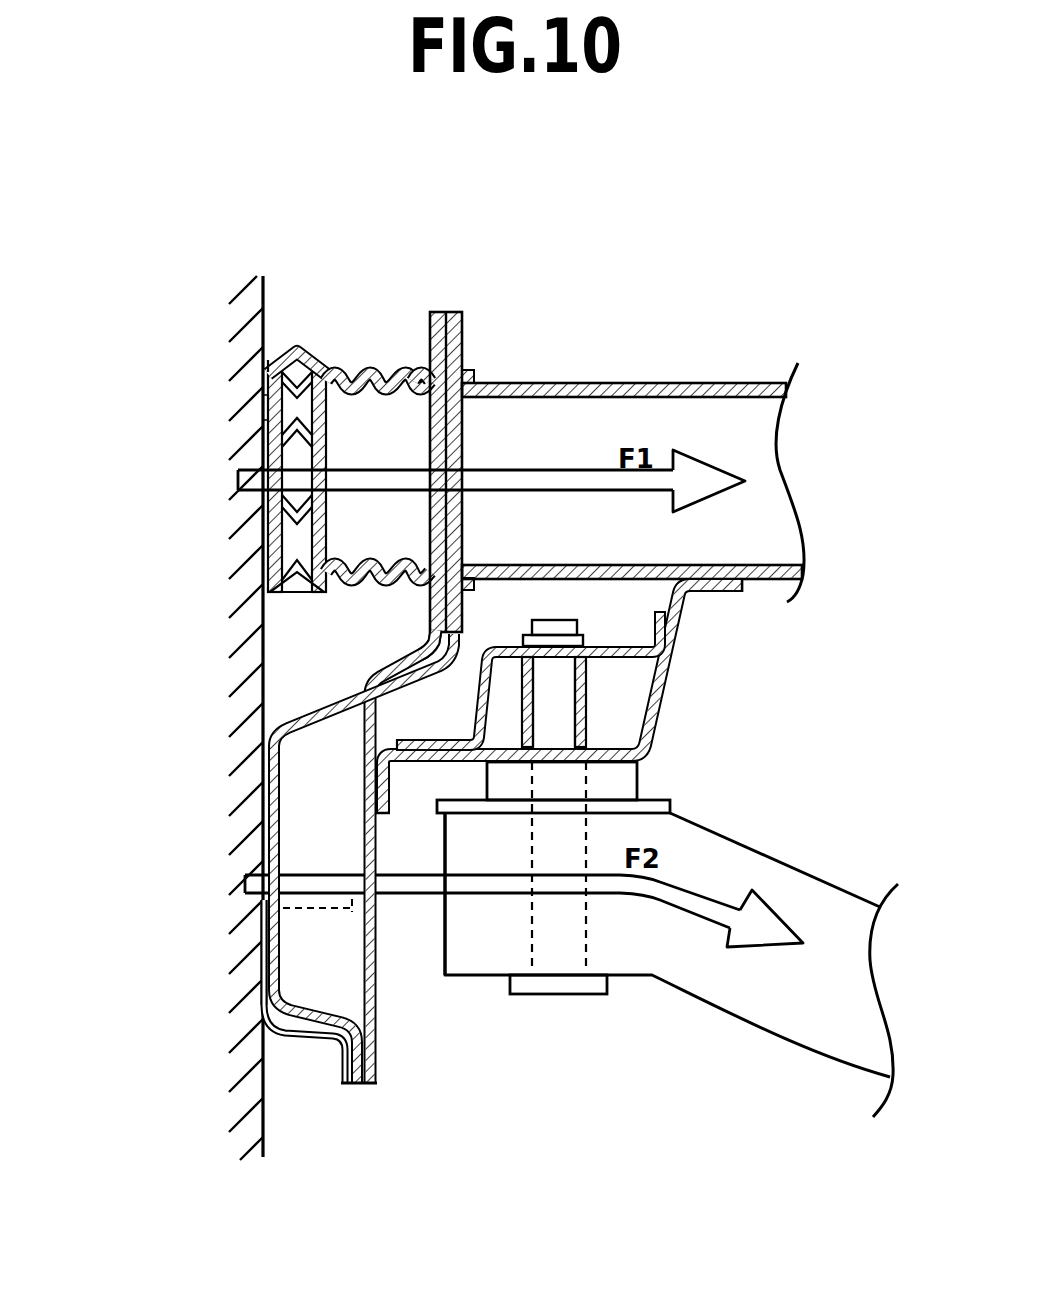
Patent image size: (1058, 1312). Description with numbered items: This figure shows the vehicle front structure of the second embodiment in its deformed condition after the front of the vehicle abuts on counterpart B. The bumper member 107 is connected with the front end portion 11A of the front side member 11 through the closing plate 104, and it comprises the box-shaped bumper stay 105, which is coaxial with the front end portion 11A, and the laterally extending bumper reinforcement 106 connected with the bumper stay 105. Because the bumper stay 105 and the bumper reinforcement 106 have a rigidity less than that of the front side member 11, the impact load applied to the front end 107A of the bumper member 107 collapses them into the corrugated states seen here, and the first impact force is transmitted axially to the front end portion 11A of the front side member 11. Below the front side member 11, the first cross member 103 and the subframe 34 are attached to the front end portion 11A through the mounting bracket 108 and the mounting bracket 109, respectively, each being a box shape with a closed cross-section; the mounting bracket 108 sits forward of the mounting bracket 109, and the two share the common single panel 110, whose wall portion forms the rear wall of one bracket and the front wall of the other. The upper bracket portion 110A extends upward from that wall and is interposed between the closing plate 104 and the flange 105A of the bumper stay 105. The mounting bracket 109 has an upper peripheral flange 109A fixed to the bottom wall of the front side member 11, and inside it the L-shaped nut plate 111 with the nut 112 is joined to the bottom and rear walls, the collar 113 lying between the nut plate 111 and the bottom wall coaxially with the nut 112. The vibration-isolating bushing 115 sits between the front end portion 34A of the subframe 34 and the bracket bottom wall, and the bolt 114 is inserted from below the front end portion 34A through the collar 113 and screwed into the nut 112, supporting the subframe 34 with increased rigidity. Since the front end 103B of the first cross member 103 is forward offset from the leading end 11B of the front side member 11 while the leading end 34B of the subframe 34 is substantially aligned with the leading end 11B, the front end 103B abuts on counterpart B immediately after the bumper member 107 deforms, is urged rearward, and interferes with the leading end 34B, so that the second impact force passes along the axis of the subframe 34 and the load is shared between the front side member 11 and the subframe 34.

The front side member 11 is at (632, 451).
The front end portion of front side member 11A is at (552, 383).
The leading end of front side member 11B is at (460, 640).
The subframe 34 is at (654, 947).
The front end portion of subframe 34A is at (493, 935).
The leading end of subframe 34B is at (438, 925).
The first cross member 103 is at (302, 1040).
The front end of first cross member 103B is at (263, 958).
The closing plate 104 is at (464, 325).
The bumper stay 105 is at (388, 366).
The flange of bumper stay 105A is at (420, 340).
The bumper reinforcement 106 is at (298, 352).
The bumper member 107 is at (345, 362).
The front end of bumper member 107A is at (264, 407).
The mounting bracket 108 is at (268, 792).
The mounting bracket 109 is at (672, 675).
The upper peripheral flange 109A is at (720, 590).
The panel 110 is at (377, 1003).
The upper bracket portion 110A is at (437, 645).
The nut plate 111 is at (636, 648).
The nut 112 is at (587, 636).
The collar 113 is at (592, 692).
The bolt 114 is at (577, 994).
The vibration-isolating bushing 115 is at (622, 792).
The counterpart B is at (262, 652).